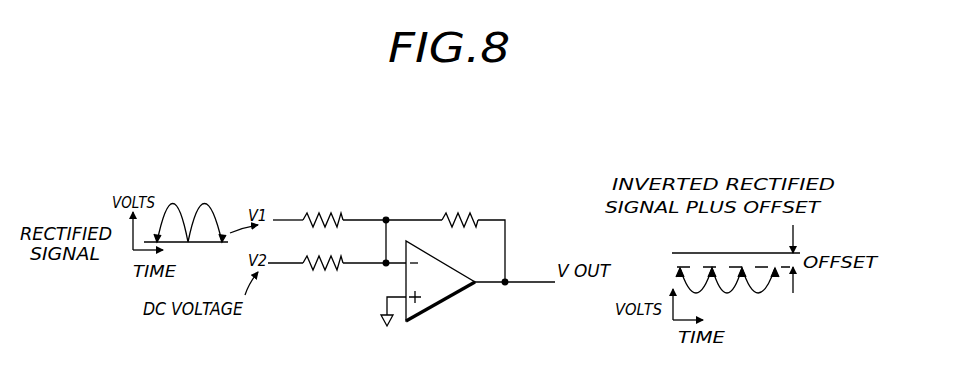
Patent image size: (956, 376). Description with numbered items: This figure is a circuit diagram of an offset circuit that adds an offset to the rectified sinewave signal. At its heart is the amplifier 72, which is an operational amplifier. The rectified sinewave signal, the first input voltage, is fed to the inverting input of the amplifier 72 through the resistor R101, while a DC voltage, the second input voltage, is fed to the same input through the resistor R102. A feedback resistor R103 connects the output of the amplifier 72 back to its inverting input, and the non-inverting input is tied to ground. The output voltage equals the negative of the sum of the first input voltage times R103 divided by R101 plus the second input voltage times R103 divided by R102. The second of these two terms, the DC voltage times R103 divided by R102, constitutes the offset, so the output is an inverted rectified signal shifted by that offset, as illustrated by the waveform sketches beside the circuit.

The input resistor for V1 R101 is at (339, 199).
The input resistor for V2 R102 is at (328, 270).
The feedback resistor R103 is at (476, 199).
The amplifier 72 is at (440, 291).